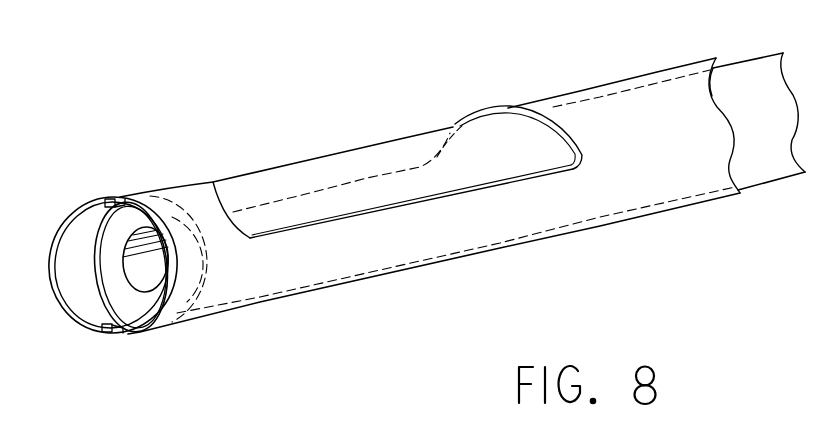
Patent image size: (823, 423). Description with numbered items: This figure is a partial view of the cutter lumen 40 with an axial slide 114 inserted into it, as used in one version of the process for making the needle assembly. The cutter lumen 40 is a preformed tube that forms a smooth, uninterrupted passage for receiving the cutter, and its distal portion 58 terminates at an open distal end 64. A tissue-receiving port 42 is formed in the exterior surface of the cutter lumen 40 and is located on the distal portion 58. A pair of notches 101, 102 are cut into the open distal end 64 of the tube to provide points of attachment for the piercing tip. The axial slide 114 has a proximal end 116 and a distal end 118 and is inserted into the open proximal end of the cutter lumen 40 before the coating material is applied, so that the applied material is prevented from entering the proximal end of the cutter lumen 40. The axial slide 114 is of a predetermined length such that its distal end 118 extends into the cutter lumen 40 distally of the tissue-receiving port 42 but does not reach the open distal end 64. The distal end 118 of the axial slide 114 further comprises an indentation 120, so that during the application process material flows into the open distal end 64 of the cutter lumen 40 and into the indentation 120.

The cutter lumen 40 is at (580, 90).
The tissue-receiving port 42 is at (260, 115).
The distal portion 58 is at (138, 188).
The open distal end 64 is at (82, 290).
The notch 101 is at (110, 198).
The notch 102 is at (110, 330).
The axial slide 114 is at (395, 140).
The proximal end 116 is at (762, 55).
The distal end 118 is at (112, 238).
The indentation 120 is at (143, 273).